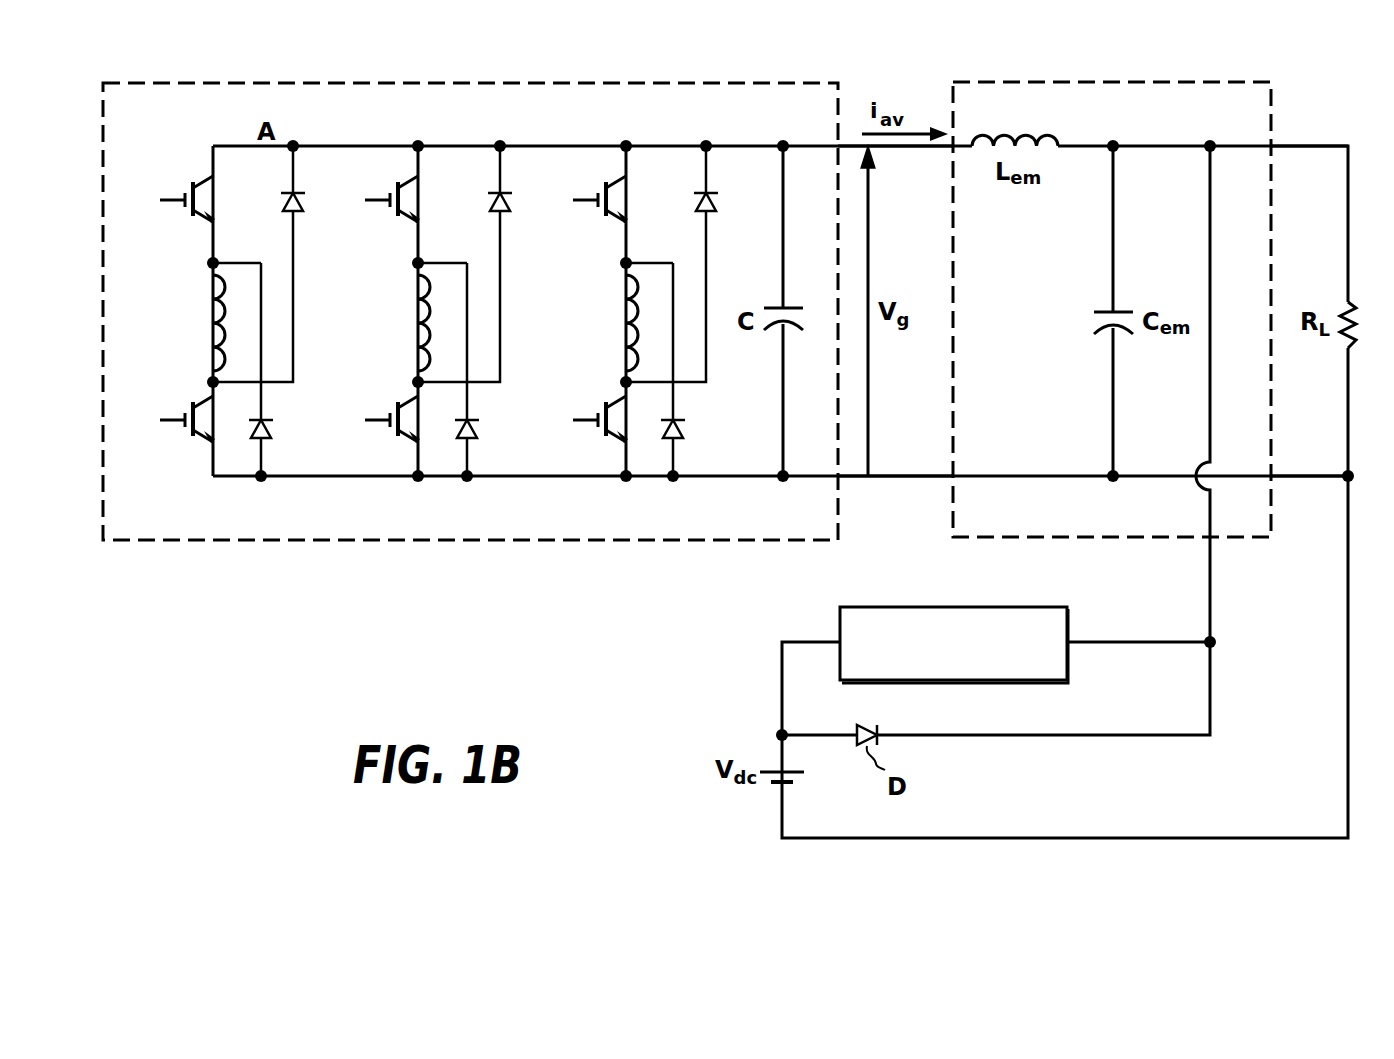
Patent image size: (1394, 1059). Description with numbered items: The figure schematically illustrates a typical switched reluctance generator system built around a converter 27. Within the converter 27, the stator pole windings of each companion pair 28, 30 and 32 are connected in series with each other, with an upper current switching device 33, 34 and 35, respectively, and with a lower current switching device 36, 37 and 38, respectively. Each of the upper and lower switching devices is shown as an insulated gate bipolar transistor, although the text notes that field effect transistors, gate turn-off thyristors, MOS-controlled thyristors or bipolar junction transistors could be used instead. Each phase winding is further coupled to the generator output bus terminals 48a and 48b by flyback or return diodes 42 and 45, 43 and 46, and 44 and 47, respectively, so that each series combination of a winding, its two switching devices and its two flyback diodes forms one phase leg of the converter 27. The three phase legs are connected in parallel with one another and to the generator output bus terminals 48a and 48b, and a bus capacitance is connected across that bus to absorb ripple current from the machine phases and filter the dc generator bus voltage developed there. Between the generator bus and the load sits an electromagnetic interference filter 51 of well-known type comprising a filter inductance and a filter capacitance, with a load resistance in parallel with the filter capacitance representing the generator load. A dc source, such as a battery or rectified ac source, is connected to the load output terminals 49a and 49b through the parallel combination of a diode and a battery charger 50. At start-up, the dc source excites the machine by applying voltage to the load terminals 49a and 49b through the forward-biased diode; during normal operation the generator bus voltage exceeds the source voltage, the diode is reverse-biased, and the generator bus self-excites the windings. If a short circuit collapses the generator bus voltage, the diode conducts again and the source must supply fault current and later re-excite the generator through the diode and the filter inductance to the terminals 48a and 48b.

The converter 27 is at (542, 83).
The stator pole winding companion pair 28 is at (213, 326).
The stator pole winding companion pair 30 is at (418, 326).
The stator pole winding companion pair 32 is at (626, 326).
The upper current switching device 33 is at (193, 187).
The upper current switching device 34 is at (400, 187).
The upper current switching device 35 is at (607, 187).
The lower current switching device 36 is at (193, 407).
The lower current switching device 37 is at (400, 407).
The lower current switching device 38 is at (607, 407).
The flyback diode 42 is at (302, 210).
The flyback diode 43 is at (509, 210).
The flyback diode 44 is at (715, 210).
The flyback diode 45 is at (270, 438).
The flyback diode 46 is at (478, 438).
The flyback diode 47 is at (684, 438).
The generator output bus terminal 48a is at (907, 148).
The generator output bus terminal 48b is at (895, 476).
The load output terminal 49a is at (1298, 146).
The load output terminal 49b is at (1290, 476).
The battery charger 50 is at (1068, 668).
The electromagnetic interference filter 51 is at (1150, 82).